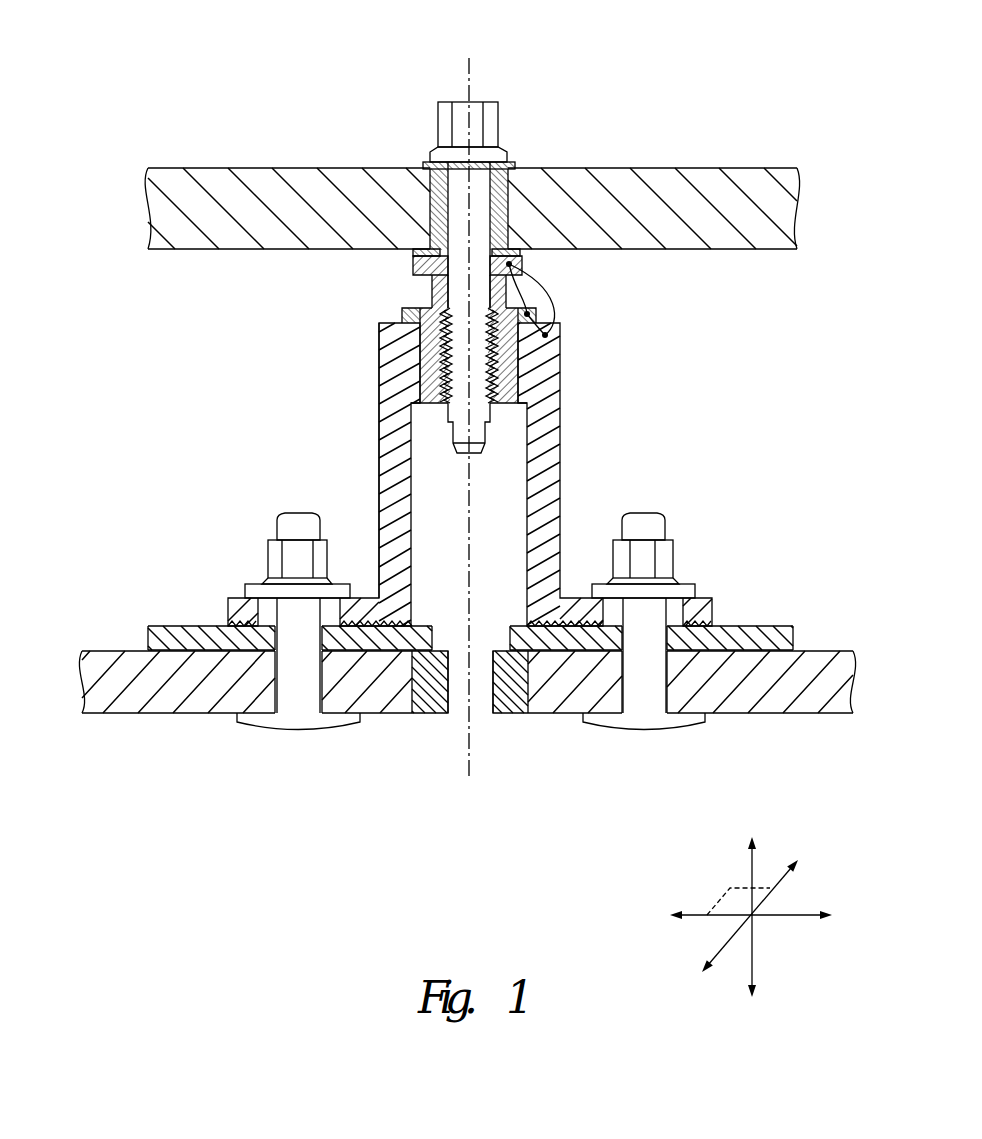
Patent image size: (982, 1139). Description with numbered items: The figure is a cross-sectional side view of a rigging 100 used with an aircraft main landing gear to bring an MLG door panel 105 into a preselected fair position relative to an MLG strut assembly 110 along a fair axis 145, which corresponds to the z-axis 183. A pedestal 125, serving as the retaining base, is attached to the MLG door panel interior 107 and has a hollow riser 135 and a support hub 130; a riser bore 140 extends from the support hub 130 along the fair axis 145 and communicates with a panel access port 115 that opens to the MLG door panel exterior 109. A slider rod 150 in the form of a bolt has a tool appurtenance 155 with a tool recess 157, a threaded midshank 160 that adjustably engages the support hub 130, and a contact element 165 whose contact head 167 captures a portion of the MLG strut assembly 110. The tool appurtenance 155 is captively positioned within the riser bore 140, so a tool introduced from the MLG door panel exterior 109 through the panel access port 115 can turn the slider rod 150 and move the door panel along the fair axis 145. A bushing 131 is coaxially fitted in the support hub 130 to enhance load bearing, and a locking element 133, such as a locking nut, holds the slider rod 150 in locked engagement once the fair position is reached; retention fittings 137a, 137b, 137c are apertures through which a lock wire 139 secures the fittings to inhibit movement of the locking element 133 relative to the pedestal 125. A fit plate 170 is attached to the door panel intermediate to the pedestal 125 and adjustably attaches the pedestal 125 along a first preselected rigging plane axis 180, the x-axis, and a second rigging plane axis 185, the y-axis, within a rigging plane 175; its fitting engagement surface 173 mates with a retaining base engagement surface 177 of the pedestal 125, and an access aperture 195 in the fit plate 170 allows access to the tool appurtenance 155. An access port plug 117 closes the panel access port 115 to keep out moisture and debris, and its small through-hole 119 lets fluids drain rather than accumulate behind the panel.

The rigging 100 is at (212, 406).
The MLG door panel 105 is at (453, 708).
The MLG door panel interior 107 is at (126, 651).
The MLG door panel exterior 109 is at (122, 713).
The MLG strut assembly 110 is at (602, 170).
The panel access port 115 is at (400, 683).
The access port plug 117 is at (425, 713).
The through-hole 119 is at (460, 700).
The pedestal 125 is at (470, 475).
The support hub 130 is at (418, 346).
The bushing 131 is at (402, 312).
The locking element 133 is at (432, 290).
The hollow riser 135 is at (386, 468).
The retention fitting 137a is at (549, 335).
The retention fitting 137b is at (523, 257).
The retention fitting 137c is at (531, 314).
The lock wire 139 is at (608, 302).
The riser bore 140 is at (487, 518).
The fair axis 145 is at (470, 72).
The slider rod 150 is at (413, 263).
The tool appurtenance 155 is at (413, 423).
The tool recess 157 is at (476, 455).
The threaded midshank 160 is at (478, 377).
The contact element 165 is at (455, 218).
The contact head 167 is at (500, 118).
The fit plate 170 is at (489, 678).
The fitting engagement surface 173 is at (573, 636).
The rigging plane 175 is at (730, 897).
The retaining base engagement surface 177 is at (572, 628).
The first preselected rigging plane axis 180 is at (798, 914).
The z-axis 183 is at (754, 858).
The second rigging plane axis 185 is at (722, 953).
The access aperture 195 is at (496, 642).